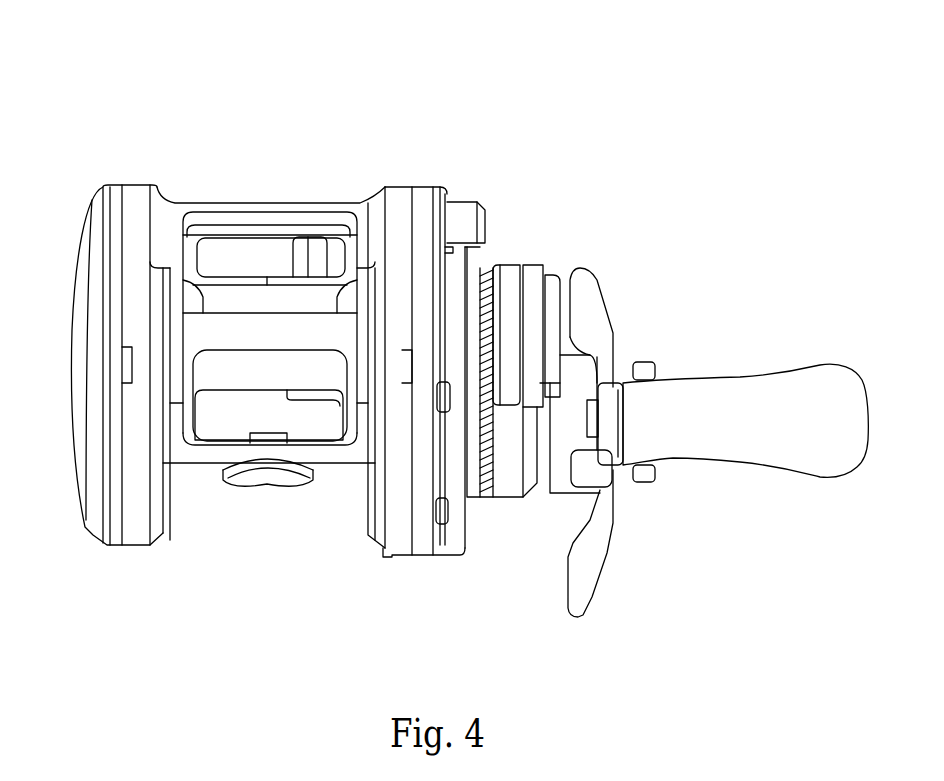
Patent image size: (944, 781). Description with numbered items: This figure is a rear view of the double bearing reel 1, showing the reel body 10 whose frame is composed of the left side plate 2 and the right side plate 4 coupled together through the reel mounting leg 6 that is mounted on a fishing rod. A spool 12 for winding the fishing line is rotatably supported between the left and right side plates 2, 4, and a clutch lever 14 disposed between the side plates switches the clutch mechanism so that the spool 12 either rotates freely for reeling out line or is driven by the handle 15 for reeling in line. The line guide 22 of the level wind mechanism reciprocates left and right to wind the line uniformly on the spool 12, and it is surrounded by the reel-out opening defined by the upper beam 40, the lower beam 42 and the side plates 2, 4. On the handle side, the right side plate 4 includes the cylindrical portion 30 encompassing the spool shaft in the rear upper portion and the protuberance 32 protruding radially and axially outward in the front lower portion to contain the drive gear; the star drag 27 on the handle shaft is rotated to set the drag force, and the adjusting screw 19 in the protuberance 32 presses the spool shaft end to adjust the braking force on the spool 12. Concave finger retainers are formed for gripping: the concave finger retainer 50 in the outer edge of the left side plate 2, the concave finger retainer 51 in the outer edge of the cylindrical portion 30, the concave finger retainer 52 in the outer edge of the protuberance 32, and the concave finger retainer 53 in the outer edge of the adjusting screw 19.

The double bearing reel 1 is at (474, 99).
The left side plate 2 is at (139, 552).
The right side plate 4 is at (436, 566).
The reel mounting leg 6 is at (337, 453).
The reel body 10 is at (141, 178).
The spool 12 is at (228, 335).
The clutch lever 14 is at (238, 420).
The handle 15 is at (727, 440).
The adjusting screw 19 is at (543, 275).
The line guide 22 is at (300, 257).
The star drag 27 is at (593, 318).
The cylindrical portion 30 is at (425, 460).
The protuberance 32 is at (460, 283).
The upper beam 40 is at (310, 200).
The lower beam 42 is at (293, 277).
The concave finger retainer 50 is at (100, 212).
The concave finger retainer 51 is at (447, 187).
The concave finger retainer 52 is at (468, 535).
The concave finger retainer 53 is at (548, 393).